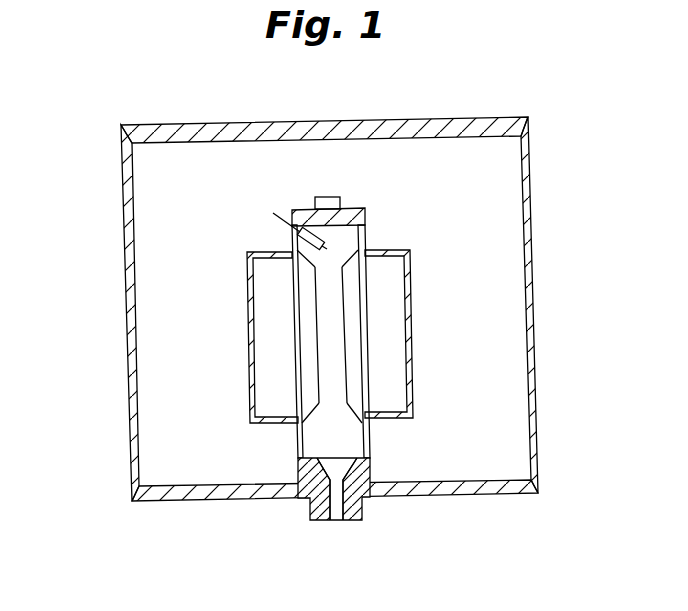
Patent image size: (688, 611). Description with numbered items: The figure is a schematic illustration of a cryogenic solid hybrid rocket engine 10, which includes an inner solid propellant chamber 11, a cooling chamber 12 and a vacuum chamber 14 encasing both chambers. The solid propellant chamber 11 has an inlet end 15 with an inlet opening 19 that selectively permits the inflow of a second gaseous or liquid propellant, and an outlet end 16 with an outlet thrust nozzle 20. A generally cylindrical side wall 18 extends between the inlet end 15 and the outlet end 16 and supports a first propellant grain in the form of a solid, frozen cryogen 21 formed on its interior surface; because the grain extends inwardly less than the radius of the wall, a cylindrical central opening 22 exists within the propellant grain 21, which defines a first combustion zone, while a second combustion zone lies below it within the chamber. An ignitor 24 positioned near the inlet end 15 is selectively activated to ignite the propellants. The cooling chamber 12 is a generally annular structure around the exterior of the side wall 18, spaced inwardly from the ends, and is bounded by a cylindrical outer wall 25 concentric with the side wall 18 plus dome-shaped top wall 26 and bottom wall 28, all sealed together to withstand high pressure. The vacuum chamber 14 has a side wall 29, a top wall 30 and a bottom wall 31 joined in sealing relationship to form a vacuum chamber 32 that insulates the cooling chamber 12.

The engine 10 is at (552, 229).
The solid propellant chamber 11 is at (375, 214).
The cooling chamber 12 is at (418, 358).
The vacuum chamber 14 is at (540, 302).
The inlet end 15 is at (307, 207).
The outlet end 16 is at (358, 480).
The side wall 18 is at (366, 278).
The inlet opening 19 is at (340, 197).
The outlet thrust nozzle 20 is at (334, 508).
The solid frozen cryogen propellant grain 21 is at (357, 387).
The cylindrical central opening 22 is at (330, 360).
The ignitor 24 is at (290, 242).
The outer wall 25 is at (412, 312).
The top wall 26 is at (390, 252).
The bottom wall 28 is at (388, 420).
The side wall 29 is at (125, 292).
The top wall 30 is at (227, 123).
The bottom wall 31 is at (197, 494).
The vacuum chamber 32 is at (192, 168).